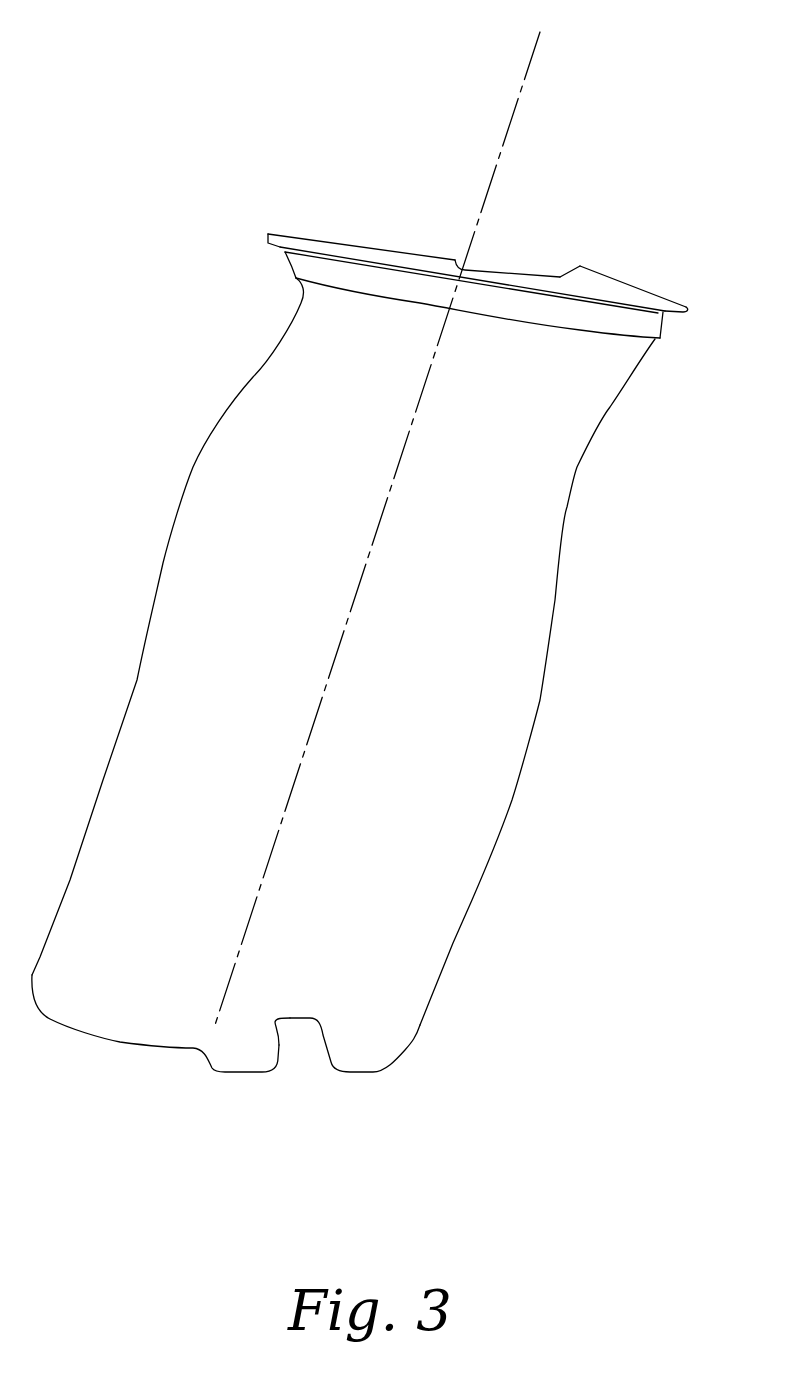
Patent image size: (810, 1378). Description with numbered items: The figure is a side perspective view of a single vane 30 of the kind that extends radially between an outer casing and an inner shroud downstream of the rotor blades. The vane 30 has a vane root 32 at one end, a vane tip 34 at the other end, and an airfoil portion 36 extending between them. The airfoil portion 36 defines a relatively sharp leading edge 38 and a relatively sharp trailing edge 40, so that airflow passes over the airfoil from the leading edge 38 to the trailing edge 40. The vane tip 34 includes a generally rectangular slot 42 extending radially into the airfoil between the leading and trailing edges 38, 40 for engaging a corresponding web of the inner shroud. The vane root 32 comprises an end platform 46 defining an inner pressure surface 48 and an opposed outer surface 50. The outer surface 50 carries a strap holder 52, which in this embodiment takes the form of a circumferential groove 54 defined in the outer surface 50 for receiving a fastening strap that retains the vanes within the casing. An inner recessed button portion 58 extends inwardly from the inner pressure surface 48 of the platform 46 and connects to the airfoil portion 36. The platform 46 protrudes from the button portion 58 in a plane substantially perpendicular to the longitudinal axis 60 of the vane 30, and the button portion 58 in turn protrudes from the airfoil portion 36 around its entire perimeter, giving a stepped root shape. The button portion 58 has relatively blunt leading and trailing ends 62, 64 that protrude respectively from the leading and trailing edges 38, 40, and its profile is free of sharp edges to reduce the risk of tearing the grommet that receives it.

The vane 30 is at (112, 462).
The vane root 32 is at (657, 259).
The vane tip 34 is at (392, 1042).
The airfoil portion 36 is at (500, 633).
The leading edge 38 is at (148, 617).
The trailing edge 40 is at (563, 538).
The slot 42 is at (277, 1042).
The end platform 46 is at (588, 284).
The inner pressure surface 48 is at (280, 248).
The outer surface 50 is at (397, 250).
The strap holder 52 is at (503, 257).
The circumferential groove 54 is at (537, 266).
The button portion 58 is at (620, 322).
The longitudinal axis 60 is at (528, 62).
The leading end 62 is at (288, 262).
The trailing end 64 is at (663, 326).